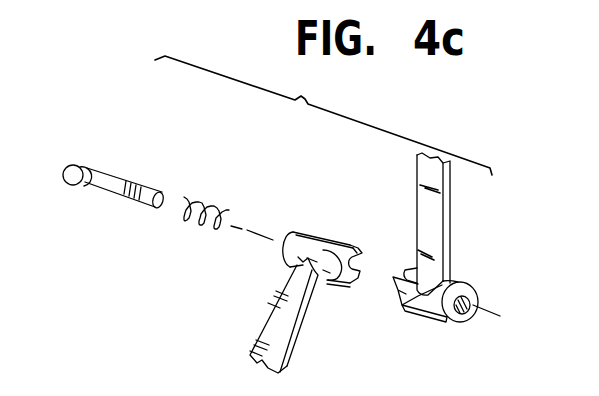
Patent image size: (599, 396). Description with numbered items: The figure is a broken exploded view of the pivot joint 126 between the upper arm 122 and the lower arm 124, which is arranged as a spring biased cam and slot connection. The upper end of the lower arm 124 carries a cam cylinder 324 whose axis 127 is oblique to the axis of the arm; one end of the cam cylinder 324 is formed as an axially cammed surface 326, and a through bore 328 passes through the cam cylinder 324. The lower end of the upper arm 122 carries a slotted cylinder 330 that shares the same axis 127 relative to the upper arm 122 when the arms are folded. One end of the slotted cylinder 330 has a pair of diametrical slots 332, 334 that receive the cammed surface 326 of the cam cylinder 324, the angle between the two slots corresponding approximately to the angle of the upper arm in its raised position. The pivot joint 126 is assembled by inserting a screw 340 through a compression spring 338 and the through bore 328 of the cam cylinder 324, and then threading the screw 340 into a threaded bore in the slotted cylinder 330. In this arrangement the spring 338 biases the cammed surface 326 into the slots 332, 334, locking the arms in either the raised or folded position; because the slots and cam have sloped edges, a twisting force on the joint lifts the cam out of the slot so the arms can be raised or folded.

The upper arm 122 is at (437, 213).
The lower arm 124 is at (313, 282).
The pivot joint 126 is at (246, 294).
The axis 127 is at (250, 231).
The cam cylinder 324 is at (292, 236).
The axially cammed surface 326 is at (340, 286).
The through bore 328 is at (353, 242).
The slotted cylinder 330 is at (466, 285).
The diametrical slot 332 is at (397, 306).
The diametrical slot 334 is at (412, 265).
The compression spring 338 is at (195, 205).
The screw 340 is at (128, 177).